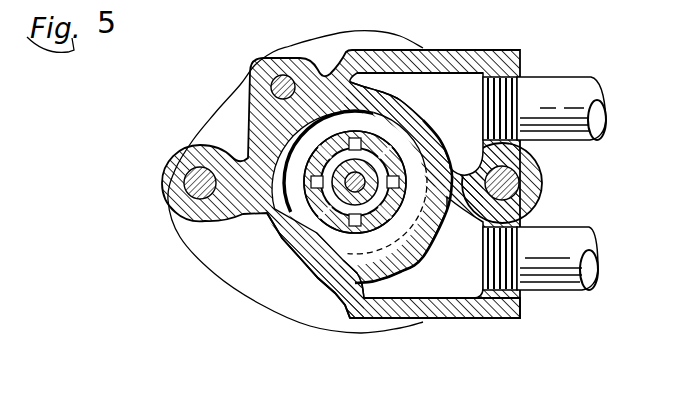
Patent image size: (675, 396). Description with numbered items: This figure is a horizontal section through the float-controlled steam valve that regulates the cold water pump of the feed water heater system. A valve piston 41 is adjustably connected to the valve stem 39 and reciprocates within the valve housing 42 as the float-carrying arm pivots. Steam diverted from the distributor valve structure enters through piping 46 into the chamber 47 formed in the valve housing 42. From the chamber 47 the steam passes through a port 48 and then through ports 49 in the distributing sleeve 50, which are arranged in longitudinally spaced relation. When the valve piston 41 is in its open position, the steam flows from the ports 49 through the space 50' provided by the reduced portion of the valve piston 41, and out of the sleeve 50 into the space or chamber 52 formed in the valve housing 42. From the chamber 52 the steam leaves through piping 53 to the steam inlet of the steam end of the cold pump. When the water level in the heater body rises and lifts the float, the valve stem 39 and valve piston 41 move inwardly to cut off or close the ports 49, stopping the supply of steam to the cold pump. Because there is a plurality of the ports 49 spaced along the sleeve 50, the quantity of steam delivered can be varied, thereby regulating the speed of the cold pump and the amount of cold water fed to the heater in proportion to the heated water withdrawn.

The valve stem 39 is at (370, 186).
The valve piston 41 is at (362, 168).
The valve housing 42 is at (490, 320).
The piping 46 is at (556, 278).
The chamber 47 is at (316, 235).
The port 48 is at (363, 268).
The ports 49 is at (279, 216).
The distributing sleeve 50 is at (381, 182).
The space 50' is at (398, 131).
The chamber 52 is at (462, 73).
The piping 53 is at (568, 88).